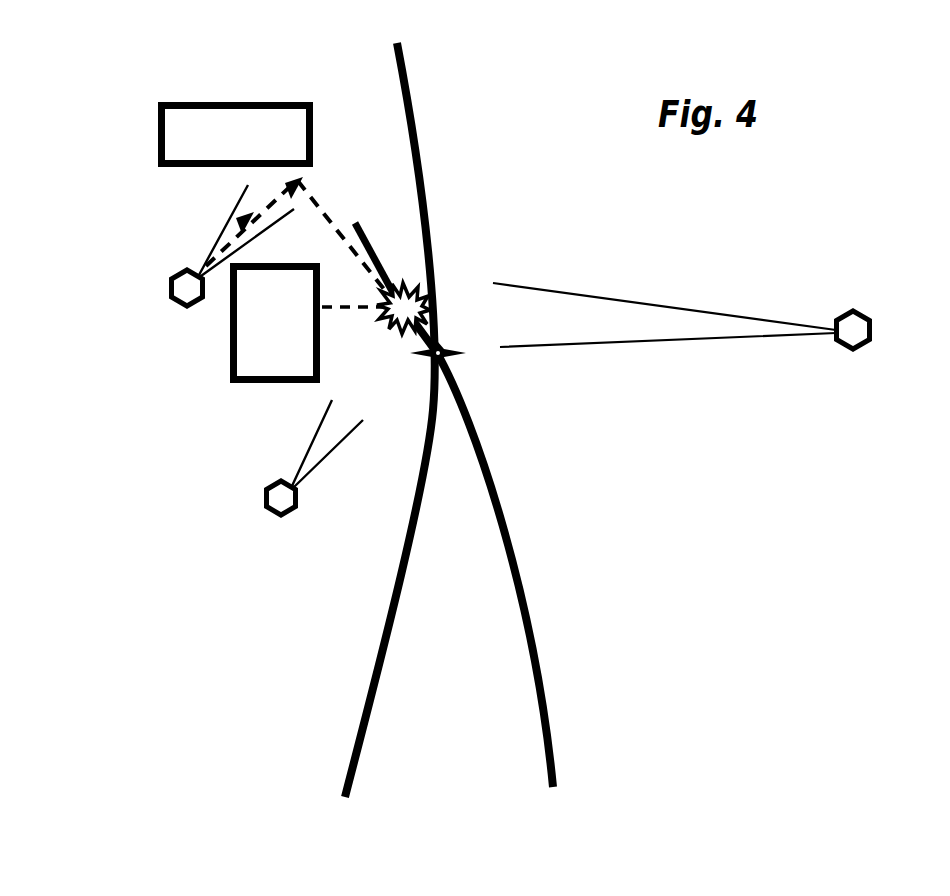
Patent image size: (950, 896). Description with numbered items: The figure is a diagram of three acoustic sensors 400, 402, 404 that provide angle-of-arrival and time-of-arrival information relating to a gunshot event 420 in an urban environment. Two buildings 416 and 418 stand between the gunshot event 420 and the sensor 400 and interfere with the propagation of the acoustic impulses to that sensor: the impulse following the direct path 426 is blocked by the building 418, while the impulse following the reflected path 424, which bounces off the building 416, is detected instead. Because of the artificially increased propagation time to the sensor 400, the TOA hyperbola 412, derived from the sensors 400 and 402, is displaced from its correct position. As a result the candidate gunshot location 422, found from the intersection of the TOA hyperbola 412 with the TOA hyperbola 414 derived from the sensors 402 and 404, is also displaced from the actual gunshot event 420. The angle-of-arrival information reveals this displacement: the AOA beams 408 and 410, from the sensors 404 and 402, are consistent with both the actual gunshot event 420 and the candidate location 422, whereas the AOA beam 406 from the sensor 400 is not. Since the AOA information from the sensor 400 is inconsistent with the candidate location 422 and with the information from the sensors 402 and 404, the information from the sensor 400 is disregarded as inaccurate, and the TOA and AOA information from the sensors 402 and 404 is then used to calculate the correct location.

The sensor 400 is at (176, 300).
The sensor 402 is at (837, 320).
The sensor 404 is at (268, 510).
The AOA beam 406 is at (214, 228).
The AOA beam 408 is at (317, 423).
The AOA beam 410 is at (700, 340).
The TOA hyperbola 412 is at (357, 748).
The TOA hyperbola 414 is at (531, 636).
The building 416 is at (303, 150).
The building 418 is at (297, 360).
The gunshot event 420 is at (428, 298).
The candidate gunshot location 422 is at (447, 360).
The reflected path 424 is at (334, 232).
The direct path 426 is at (346, 307).